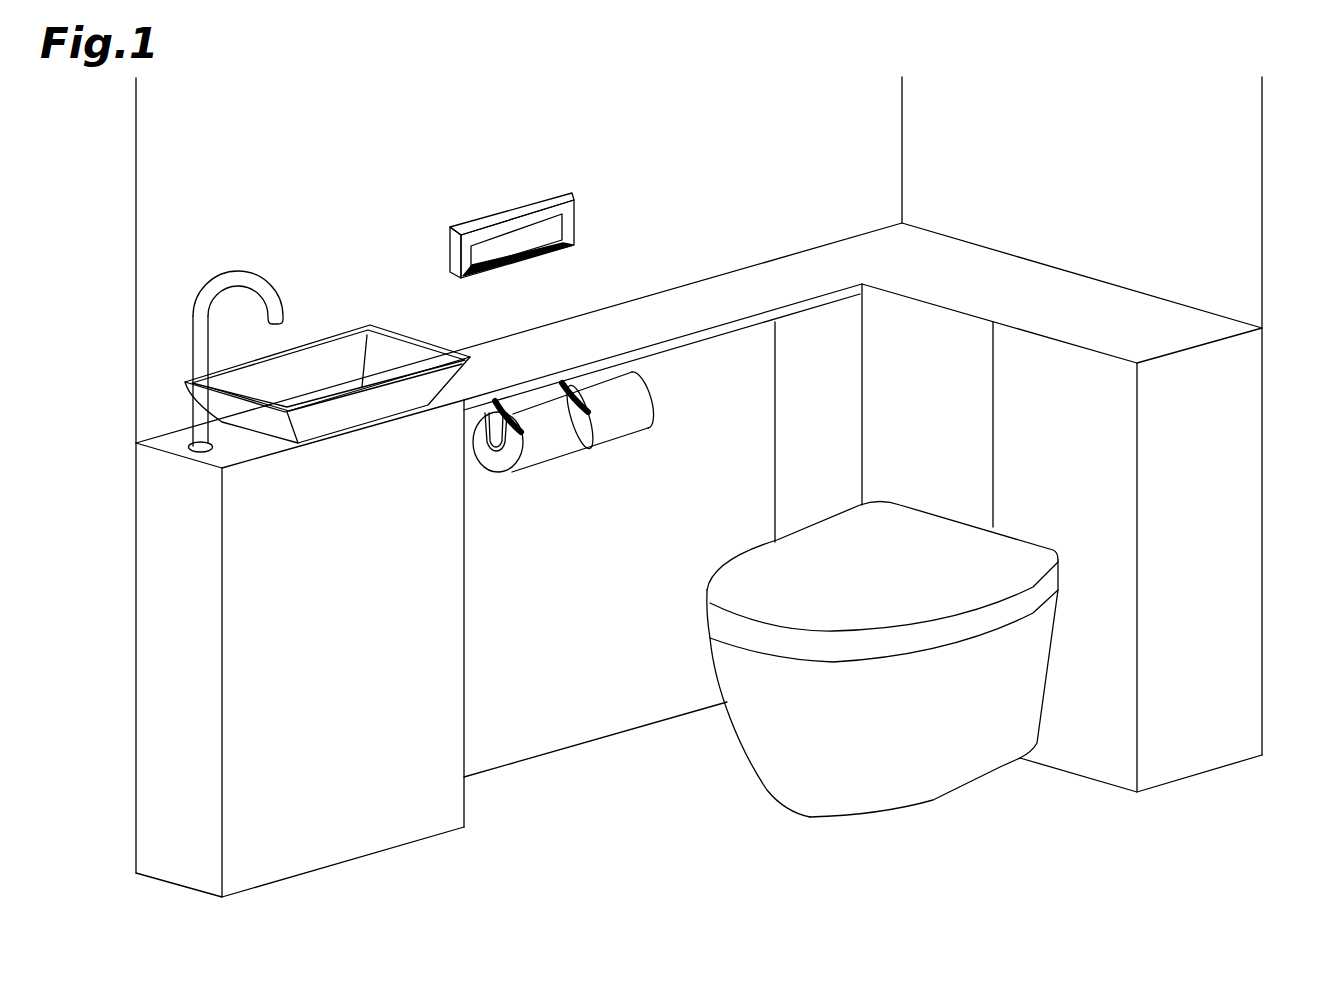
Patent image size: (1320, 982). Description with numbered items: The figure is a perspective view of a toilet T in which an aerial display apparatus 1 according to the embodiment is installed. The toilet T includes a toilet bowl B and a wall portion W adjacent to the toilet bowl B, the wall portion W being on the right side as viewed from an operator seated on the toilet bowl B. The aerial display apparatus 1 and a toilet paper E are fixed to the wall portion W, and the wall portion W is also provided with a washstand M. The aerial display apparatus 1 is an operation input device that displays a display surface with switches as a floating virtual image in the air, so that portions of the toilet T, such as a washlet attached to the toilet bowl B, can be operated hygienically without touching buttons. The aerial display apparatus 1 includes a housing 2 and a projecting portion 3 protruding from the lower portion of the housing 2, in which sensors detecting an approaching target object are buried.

The wall portion W is at (210, 193).
The toilet T is at (1027, 290).
The washstand M is at (333, 363).
The aerial display apparatus 1 is at (538, 209).
The housing 2 is at (537, 208).
The projecting portion 3 is at (543, 250).
The toilet paper E is at (612, 430).
The toilet bowl B is at (920, 742).